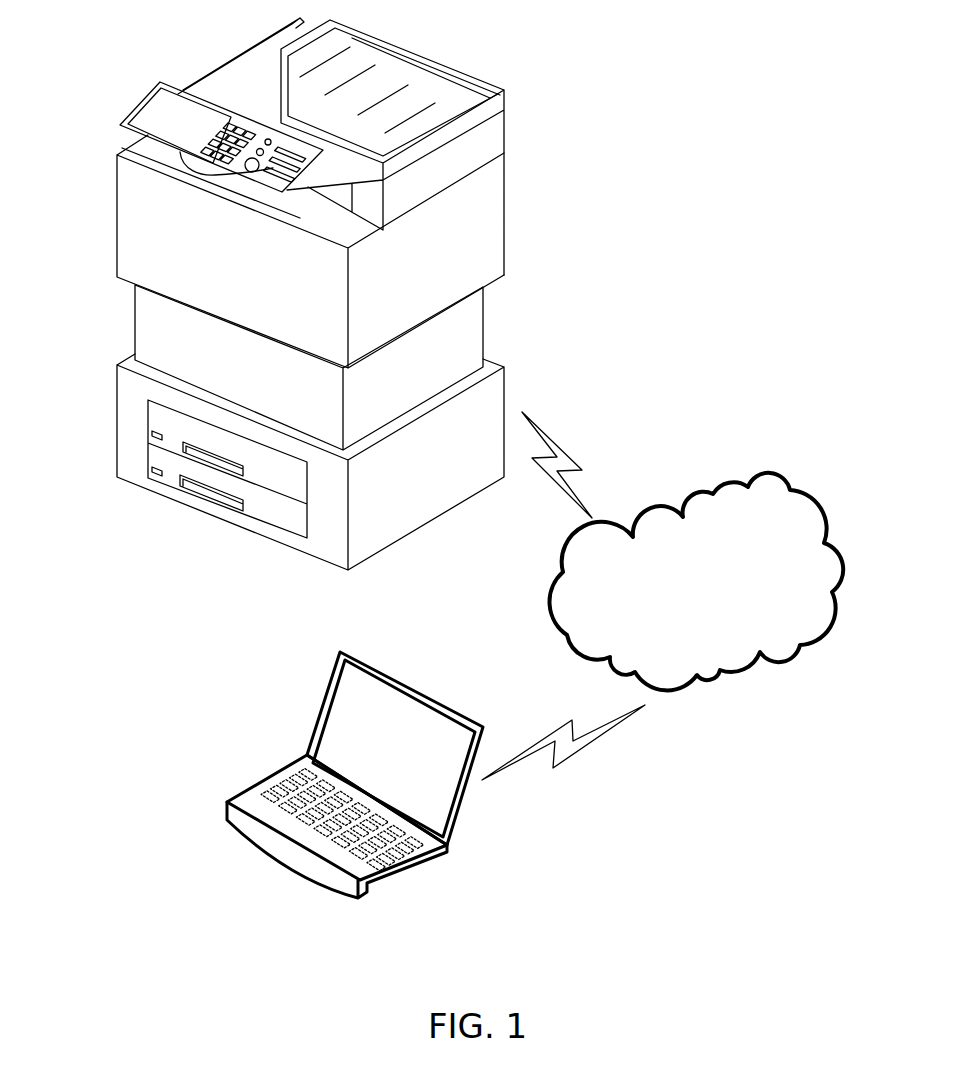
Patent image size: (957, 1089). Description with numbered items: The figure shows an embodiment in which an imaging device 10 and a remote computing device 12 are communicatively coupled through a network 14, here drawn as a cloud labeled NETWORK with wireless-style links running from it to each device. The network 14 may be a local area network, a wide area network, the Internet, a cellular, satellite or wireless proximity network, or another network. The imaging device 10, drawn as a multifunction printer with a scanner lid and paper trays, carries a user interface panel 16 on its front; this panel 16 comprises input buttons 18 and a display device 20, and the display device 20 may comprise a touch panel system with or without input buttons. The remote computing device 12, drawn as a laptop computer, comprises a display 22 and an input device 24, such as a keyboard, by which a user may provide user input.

The imaging device 10 is at (269, 294).
The remote computing device 12 is at (371, 785).
The network 14 is at (817, 612).
The user interface panel 16 is at (268, 177).
The input buttons 18 is at (242, 130).
The display device 20 is at (155, 112).
The display 22 is at (440, 777).
The input device 24 is at (357, 860).